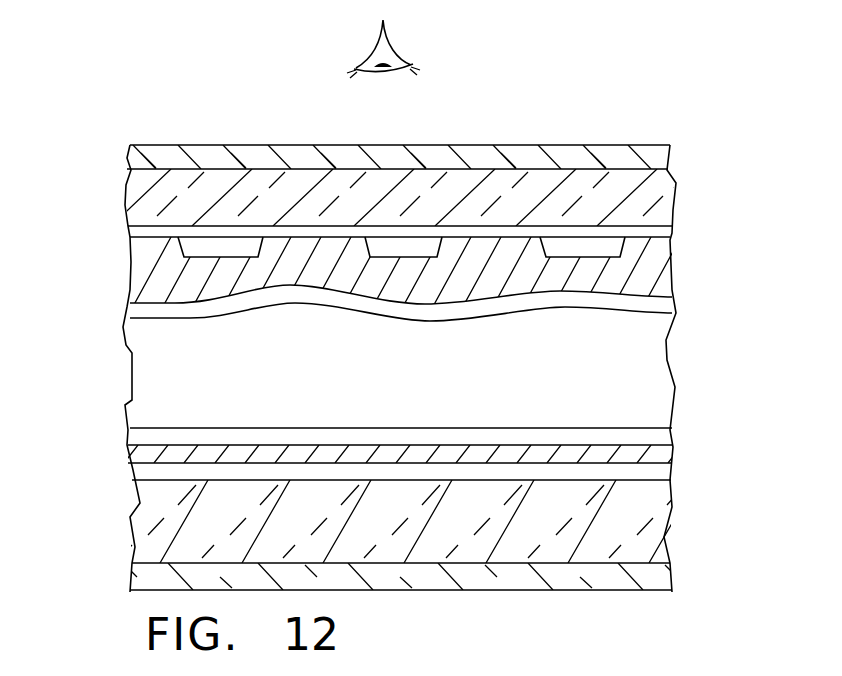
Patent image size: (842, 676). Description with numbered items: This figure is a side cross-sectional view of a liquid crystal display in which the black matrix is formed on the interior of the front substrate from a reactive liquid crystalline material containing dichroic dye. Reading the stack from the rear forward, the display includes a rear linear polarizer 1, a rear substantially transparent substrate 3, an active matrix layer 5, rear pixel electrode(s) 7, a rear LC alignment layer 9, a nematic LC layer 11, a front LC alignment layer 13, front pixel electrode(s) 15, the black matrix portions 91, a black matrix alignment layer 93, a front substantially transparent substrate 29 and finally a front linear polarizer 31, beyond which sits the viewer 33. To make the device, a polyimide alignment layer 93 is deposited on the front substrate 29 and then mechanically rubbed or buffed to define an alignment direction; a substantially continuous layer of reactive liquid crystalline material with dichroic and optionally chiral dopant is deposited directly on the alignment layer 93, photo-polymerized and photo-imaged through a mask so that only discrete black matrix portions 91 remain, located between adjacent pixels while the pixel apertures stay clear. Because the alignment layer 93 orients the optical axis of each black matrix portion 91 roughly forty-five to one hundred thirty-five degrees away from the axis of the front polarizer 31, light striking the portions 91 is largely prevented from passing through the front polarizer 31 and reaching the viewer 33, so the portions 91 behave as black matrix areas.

The rear linear polarizer 1 is at (163, 577).
The rear substantially transparent substrate 3 is at (620, 523).
The active matrix layer 5 is at (628, 470).
The pixel electrode 7 is at (163, 458).
The rear LC orientation or alignment layer 9 is at (637, 437).
The nematic LC layer 11 is at (167, 363).
The front LC alignment or orientation layer 13 is at (643, 302).
The front pixel electrode 15 is at (645, 257).
The front substantially transparent substrate 29 is at (643, 193).
The front linear polarizer 31 is at (157, 160).
The viewer 33 is at (400, 53).
The black matrix portions 91 is at (213, 247).
The black matrix alignment layer 93 is at (150, 232).